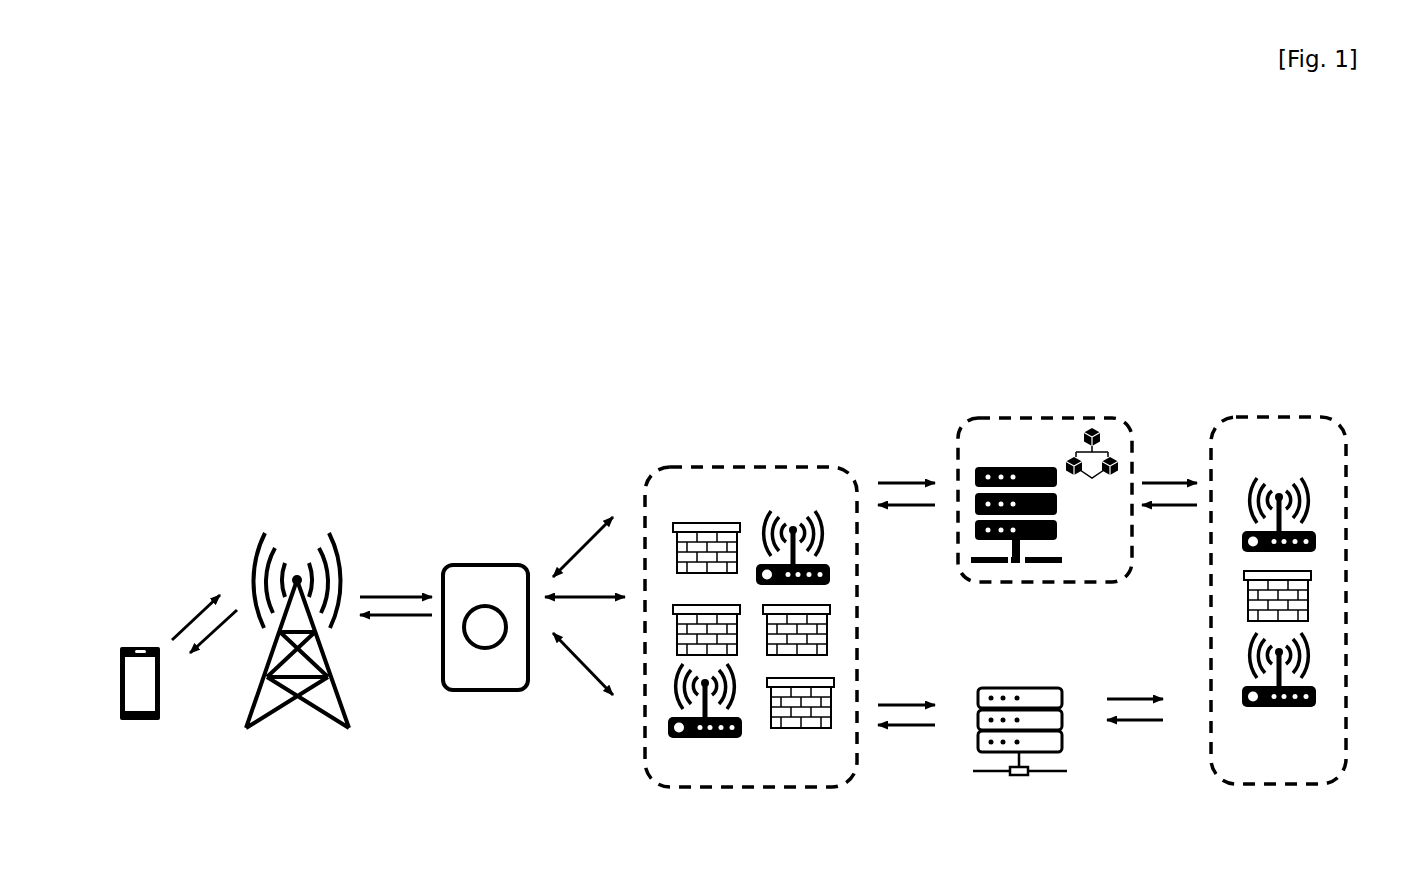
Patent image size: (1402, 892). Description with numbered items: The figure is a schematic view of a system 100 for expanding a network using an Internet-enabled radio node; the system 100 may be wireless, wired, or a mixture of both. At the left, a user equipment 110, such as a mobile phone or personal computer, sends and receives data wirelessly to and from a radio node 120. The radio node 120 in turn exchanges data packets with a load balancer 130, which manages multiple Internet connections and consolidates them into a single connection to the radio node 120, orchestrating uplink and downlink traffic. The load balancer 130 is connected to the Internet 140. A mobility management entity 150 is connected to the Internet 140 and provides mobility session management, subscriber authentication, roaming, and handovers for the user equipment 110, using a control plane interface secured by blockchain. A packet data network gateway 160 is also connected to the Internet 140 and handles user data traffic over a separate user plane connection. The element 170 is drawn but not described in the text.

The system 100 is at (241, 212).
The user equipment 110 is at (125, 722).
The radio node 120 is at (292, 553).
The load balancer 130 is at (458, 565).
The Internet 140 is at (693, 467).
The mobility management entity 150 is at (1025, 418).
The packet data network gateway 160 is at (1010, 688).
The external network with routers and firewall 170 is at (1251, 417).